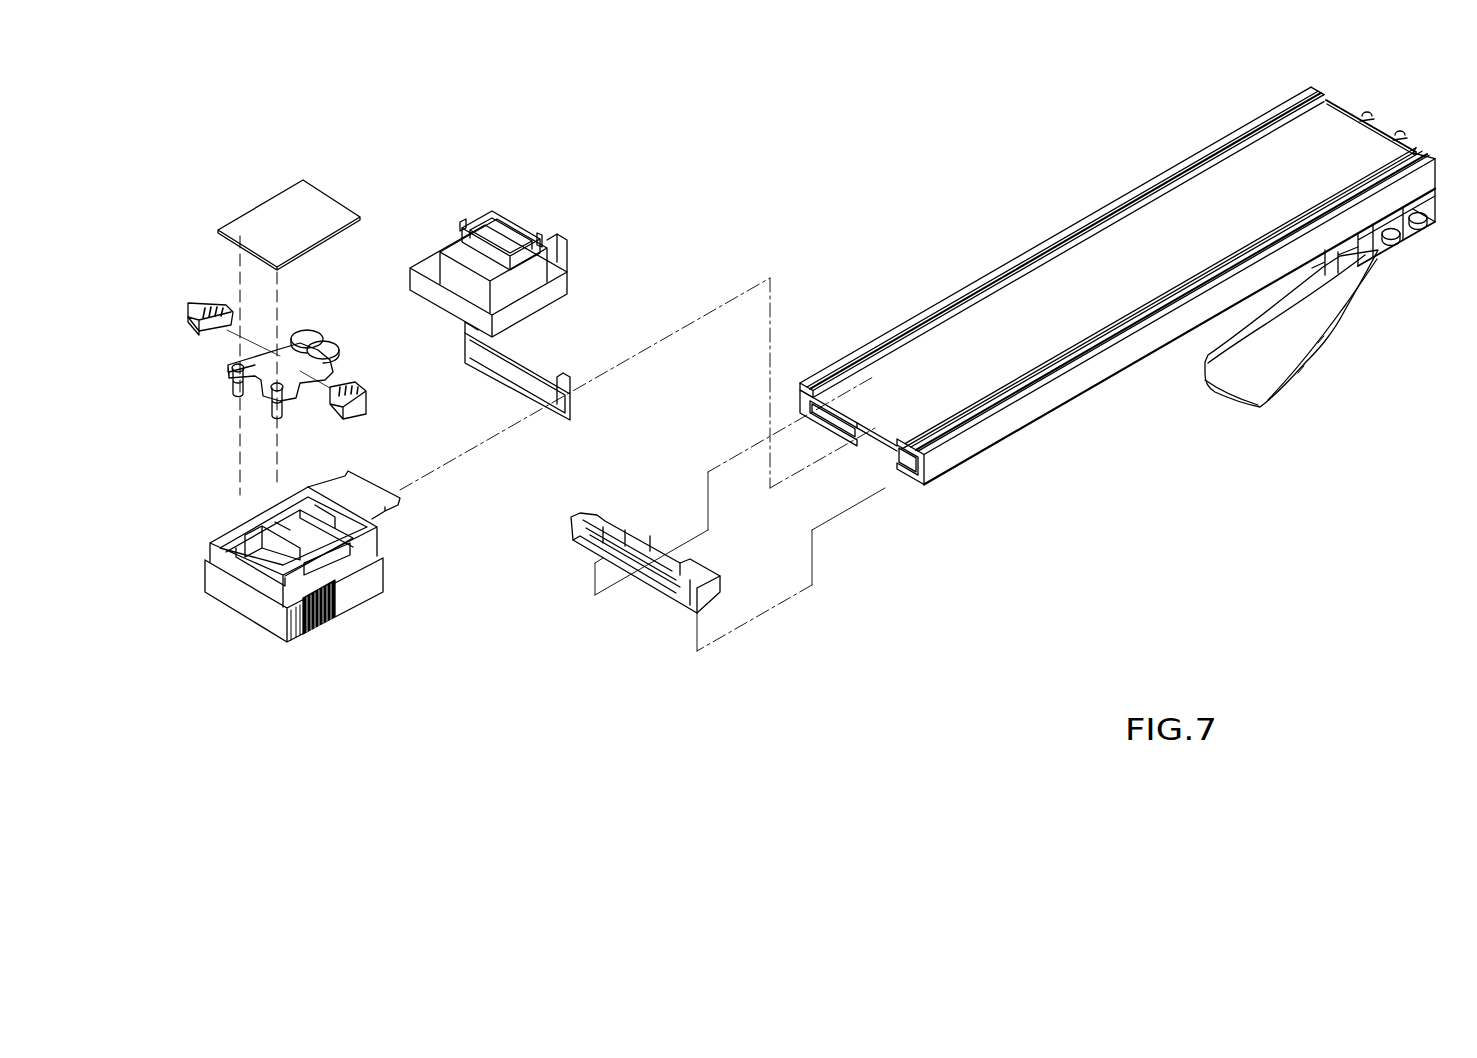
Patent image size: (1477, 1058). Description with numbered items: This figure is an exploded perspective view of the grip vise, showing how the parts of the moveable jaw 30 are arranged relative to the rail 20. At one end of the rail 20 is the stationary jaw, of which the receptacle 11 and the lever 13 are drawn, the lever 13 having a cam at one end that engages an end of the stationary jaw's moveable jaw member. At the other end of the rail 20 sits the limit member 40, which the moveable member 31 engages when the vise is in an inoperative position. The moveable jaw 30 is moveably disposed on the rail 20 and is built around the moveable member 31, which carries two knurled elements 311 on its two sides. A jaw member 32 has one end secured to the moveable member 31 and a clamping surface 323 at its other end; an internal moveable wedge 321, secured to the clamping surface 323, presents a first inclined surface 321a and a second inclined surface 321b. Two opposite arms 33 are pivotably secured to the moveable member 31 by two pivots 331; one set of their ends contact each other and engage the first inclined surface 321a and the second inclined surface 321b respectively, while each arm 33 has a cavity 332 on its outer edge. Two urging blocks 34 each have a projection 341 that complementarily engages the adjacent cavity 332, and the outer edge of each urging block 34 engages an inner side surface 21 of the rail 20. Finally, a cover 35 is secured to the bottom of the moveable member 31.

The receptacle 11 is at (1438, 237).
The lever 13 is at (1260, 407).
The rail 20 is at (1097, 263).
The inner side surface 21 is at (810, 423).
The moveable jaw 30 is at (397, 200).
The moveable member 31 is at (355, 593).
The knurled element 311 is at (316, 632).
The jaw member 32 is at (548, 252).
The internal moveable wedge 321 is at (493, 217).
The first inclined surface 321a is at (487, 257).
The second inclined surface 321b is at (443, 240).
The clamping surface 323 is at (575, 443).
The arm 33 is at (312, 333).
The pivot 331 is at (232, 378).
The cavity 332 is at (305, 378).
The urging block 34 is at (205, 307).
The projection 341 is at (222, 333).
The cover 35 is at (262, 222).
The limit member 40 is at (645, 578).